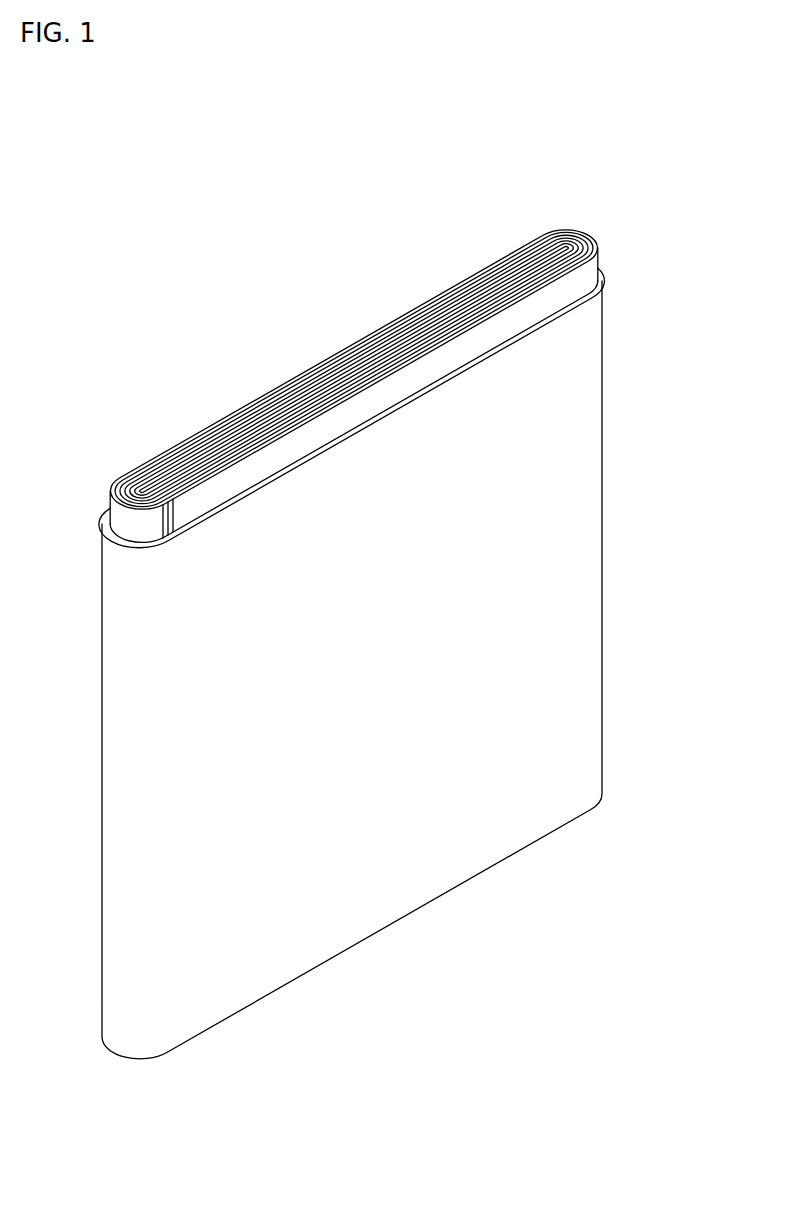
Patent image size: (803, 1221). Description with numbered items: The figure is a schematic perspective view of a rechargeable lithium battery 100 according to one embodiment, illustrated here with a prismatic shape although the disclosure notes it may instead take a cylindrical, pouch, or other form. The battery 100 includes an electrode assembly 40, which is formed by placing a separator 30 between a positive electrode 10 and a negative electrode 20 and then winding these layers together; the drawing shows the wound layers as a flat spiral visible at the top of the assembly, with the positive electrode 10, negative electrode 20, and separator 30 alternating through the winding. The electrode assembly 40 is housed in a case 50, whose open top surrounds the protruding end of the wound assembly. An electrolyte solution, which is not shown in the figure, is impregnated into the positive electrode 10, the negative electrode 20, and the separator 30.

The rechargeable lithium battery 100 is at (300, 118).
The positive electrode 10 is at (598, 258).
The negative electrode 20 is at (560, 247).
The separator 30 is at (581, 240).
The electrode assembly 40 is at (332, 332).
The case 50 is at (590, 521).